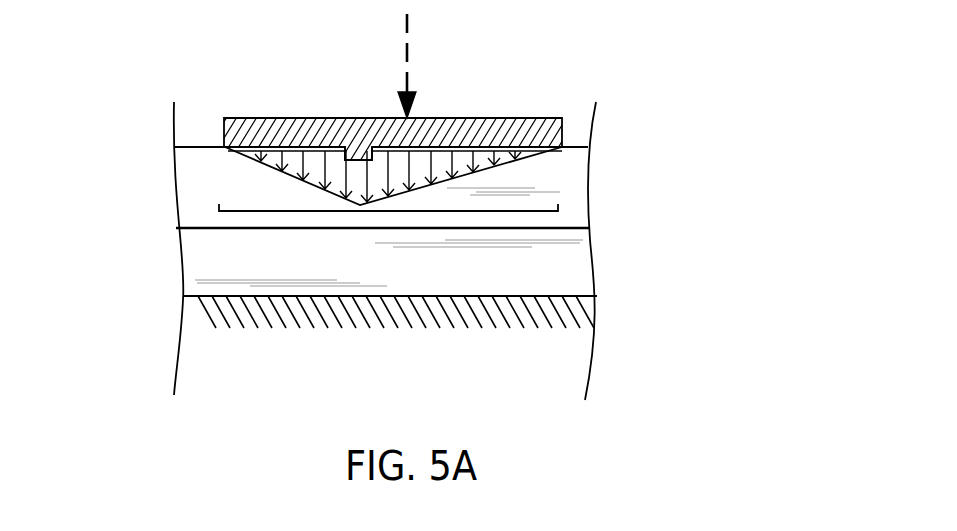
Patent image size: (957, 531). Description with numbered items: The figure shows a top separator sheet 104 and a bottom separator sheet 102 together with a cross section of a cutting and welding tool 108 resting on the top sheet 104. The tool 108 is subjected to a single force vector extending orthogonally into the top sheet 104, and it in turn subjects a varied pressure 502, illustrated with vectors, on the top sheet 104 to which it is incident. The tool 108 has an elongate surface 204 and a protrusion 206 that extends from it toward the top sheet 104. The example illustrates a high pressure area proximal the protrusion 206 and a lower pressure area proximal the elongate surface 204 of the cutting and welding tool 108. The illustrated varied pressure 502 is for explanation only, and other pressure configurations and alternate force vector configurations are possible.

The bottom separator sheet 102 is at (583, 264).
The top separator sheet 104 is at (582, 192).
The cutting and welding tool 108 is at (486, 100).
The elongate surface 204 is at (302, 148).
The protrusion 206 is at (367, 160).
The varied pressure 502 is at (395, 228).